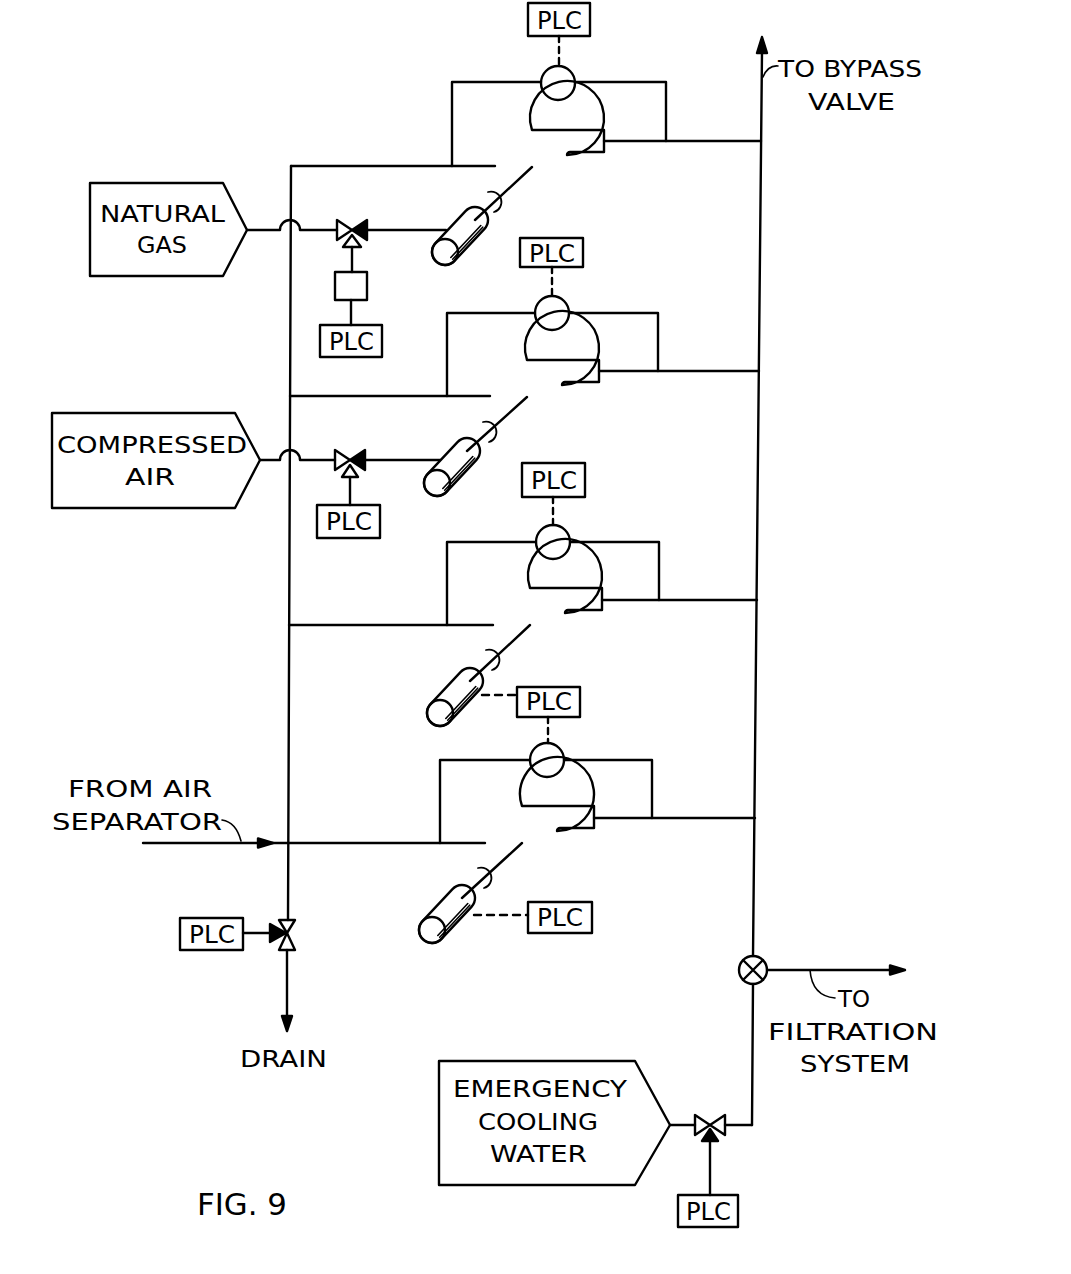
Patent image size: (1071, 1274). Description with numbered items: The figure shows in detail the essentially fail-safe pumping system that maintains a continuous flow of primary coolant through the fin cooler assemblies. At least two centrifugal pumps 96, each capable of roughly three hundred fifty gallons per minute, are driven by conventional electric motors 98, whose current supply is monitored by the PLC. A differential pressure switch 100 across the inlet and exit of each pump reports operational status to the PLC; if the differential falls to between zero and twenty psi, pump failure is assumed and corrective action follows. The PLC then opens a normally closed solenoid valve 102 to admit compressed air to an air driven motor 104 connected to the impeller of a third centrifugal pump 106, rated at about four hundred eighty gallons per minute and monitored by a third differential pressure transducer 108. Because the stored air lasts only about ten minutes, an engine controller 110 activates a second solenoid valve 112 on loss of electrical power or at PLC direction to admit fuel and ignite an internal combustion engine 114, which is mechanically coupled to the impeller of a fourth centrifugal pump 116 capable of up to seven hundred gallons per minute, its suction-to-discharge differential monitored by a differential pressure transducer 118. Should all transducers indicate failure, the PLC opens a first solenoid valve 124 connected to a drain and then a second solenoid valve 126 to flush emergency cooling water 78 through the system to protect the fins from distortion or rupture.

The emergency cooling water 78 is at (548, 1185).
The centrifugal pumps 96 is at (565, 640).
The electric motors 98 is at (455, 715).
The differential pressure switch 100 is at (567, 527).
The solenoid valve 102 is at (358, 457).
The air driven motor 104 is at (455, 488).
The third centrifugal pump 106 is at (560, 412).
The third differential pressure transducer 108 is at (567, 298).
The engine controller 110 is at (367, 286).
The second solenoid valve 112 is at (362, 226).
The internal combustion engine 114 is at (450, 265).
The fourth centrifugal pump 116 is at (566, 182).
The differential pressure transducer 118 is at (571, 71).
The first solenoid valve 124 is at (292, 922).
The second solenoid valve 126 is at (720, 1133).